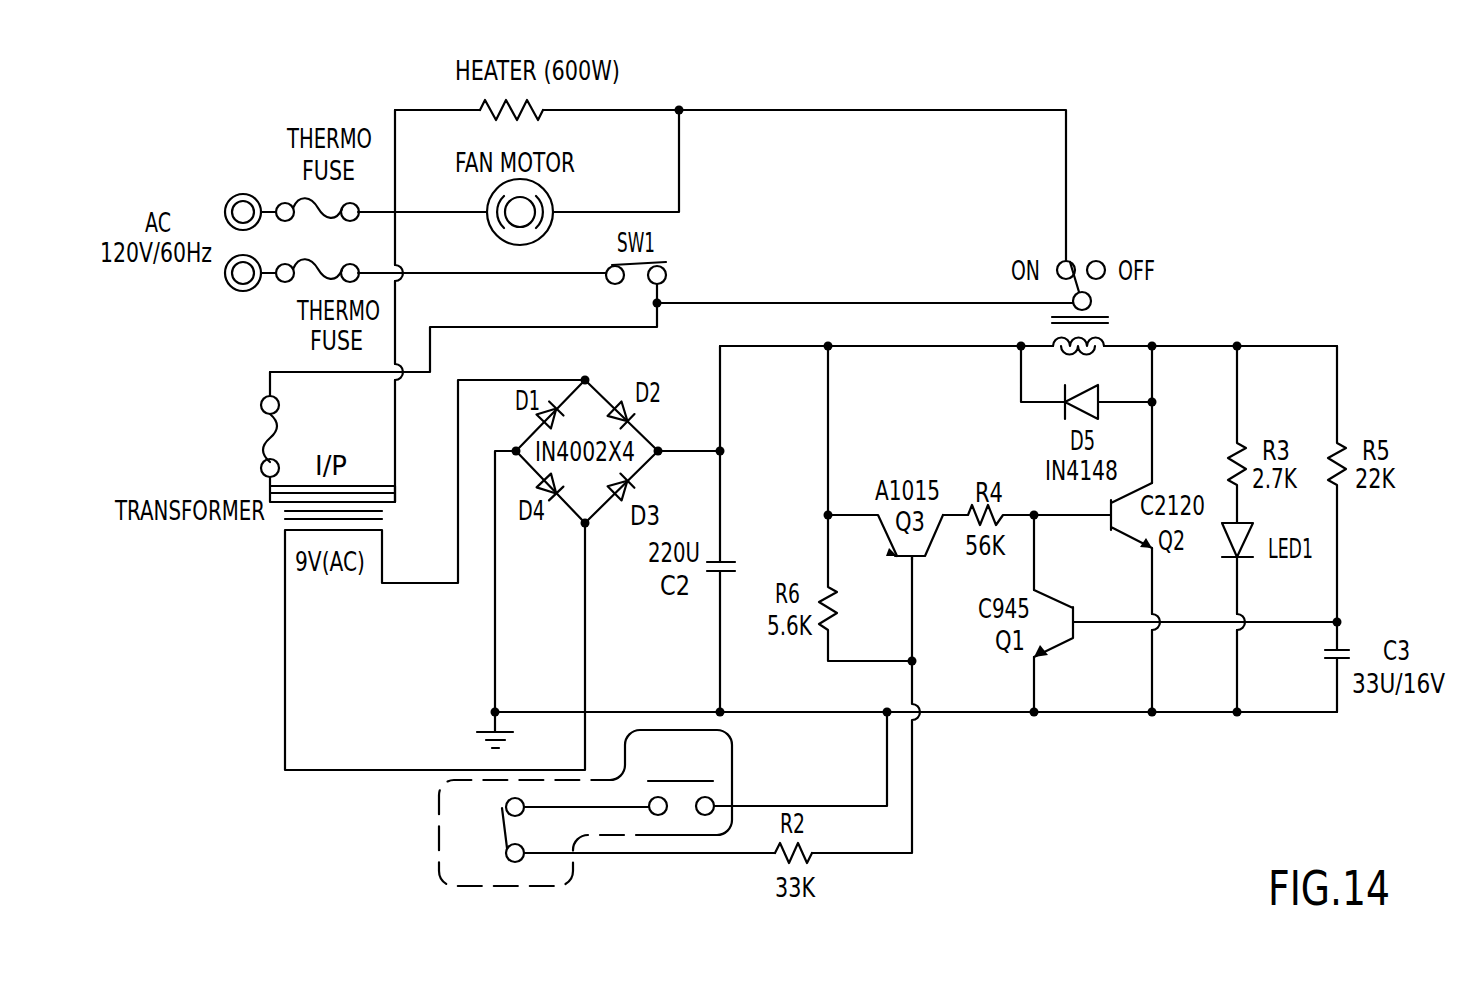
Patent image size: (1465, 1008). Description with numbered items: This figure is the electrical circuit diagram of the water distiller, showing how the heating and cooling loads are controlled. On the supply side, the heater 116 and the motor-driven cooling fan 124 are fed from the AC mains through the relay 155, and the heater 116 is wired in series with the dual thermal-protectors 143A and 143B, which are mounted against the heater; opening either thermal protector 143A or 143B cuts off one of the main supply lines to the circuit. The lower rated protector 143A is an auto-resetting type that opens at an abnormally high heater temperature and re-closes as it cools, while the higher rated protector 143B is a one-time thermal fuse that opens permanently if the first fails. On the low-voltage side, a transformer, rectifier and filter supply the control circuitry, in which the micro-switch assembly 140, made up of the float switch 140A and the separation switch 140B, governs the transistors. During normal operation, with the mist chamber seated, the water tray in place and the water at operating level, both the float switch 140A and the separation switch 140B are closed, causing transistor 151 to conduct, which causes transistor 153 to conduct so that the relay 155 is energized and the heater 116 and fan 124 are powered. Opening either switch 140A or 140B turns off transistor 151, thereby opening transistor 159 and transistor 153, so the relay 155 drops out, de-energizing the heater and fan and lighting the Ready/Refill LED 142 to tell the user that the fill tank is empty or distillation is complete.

The heater 116 is at (478, 102).
The cooling fan 124 is at (557, 195).
The lower rated thermal-protector 143A is at (297, 196).
The higher rated thermal-protector 143B is at (297, 289).
The relay 155 is at (1107, 300).
The transistor 151 is at (931, 566).
The transistor 153 is at (1167, 560).
The transistor 159 is at (1067, 650).
The Ready/Refill LED 142 is at (1264, 518).
The micro-switch assembly 140 is at (436, 807).
The float switch 140A is at (503, 862).
The separation switch 140B is at (717, 796).